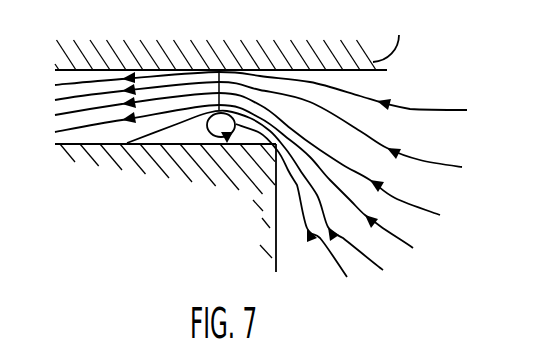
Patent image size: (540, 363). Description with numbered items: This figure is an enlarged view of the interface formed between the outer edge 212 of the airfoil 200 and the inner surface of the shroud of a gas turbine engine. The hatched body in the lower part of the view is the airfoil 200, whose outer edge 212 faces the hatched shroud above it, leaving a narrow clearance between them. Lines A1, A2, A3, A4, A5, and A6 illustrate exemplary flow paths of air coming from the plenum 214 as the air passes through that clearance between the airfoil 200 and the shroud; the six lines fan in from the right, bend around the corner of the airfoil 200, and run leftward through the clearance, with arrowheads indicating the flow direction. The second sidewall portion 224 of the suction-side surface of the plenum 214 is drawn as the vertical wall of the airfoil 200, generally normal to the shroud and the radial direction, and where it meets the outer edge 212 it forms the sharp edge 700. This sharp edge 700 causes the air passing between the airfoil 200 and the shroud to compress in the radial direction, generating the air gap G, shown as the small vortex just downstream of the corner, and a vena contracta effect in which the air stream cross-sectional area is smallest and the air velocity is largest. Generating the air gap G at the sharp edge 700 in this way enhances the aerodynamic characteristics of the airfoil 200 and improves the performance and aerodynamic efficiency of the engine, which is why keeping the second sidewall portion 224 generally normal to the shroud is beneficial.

The airfoil 200 is at (131, 254).
The outer edge 212 is at (93, 140).
The plenum 214 is at (290, 253).
The second sidewall portion 224 is at (278, 220).
The sharp edge 700 is at (276, 144).
The air gap G is at (210, 117).
The flow path line A1 is at (333, 266).
The flow path line A2 is at (378, 266).
The flow path line A3 is at (413, 248).
The flow path line A4 is at (430, 216).
The flow path line A5 is at (442, 166).
The flow path line A6 is at (440, 110).